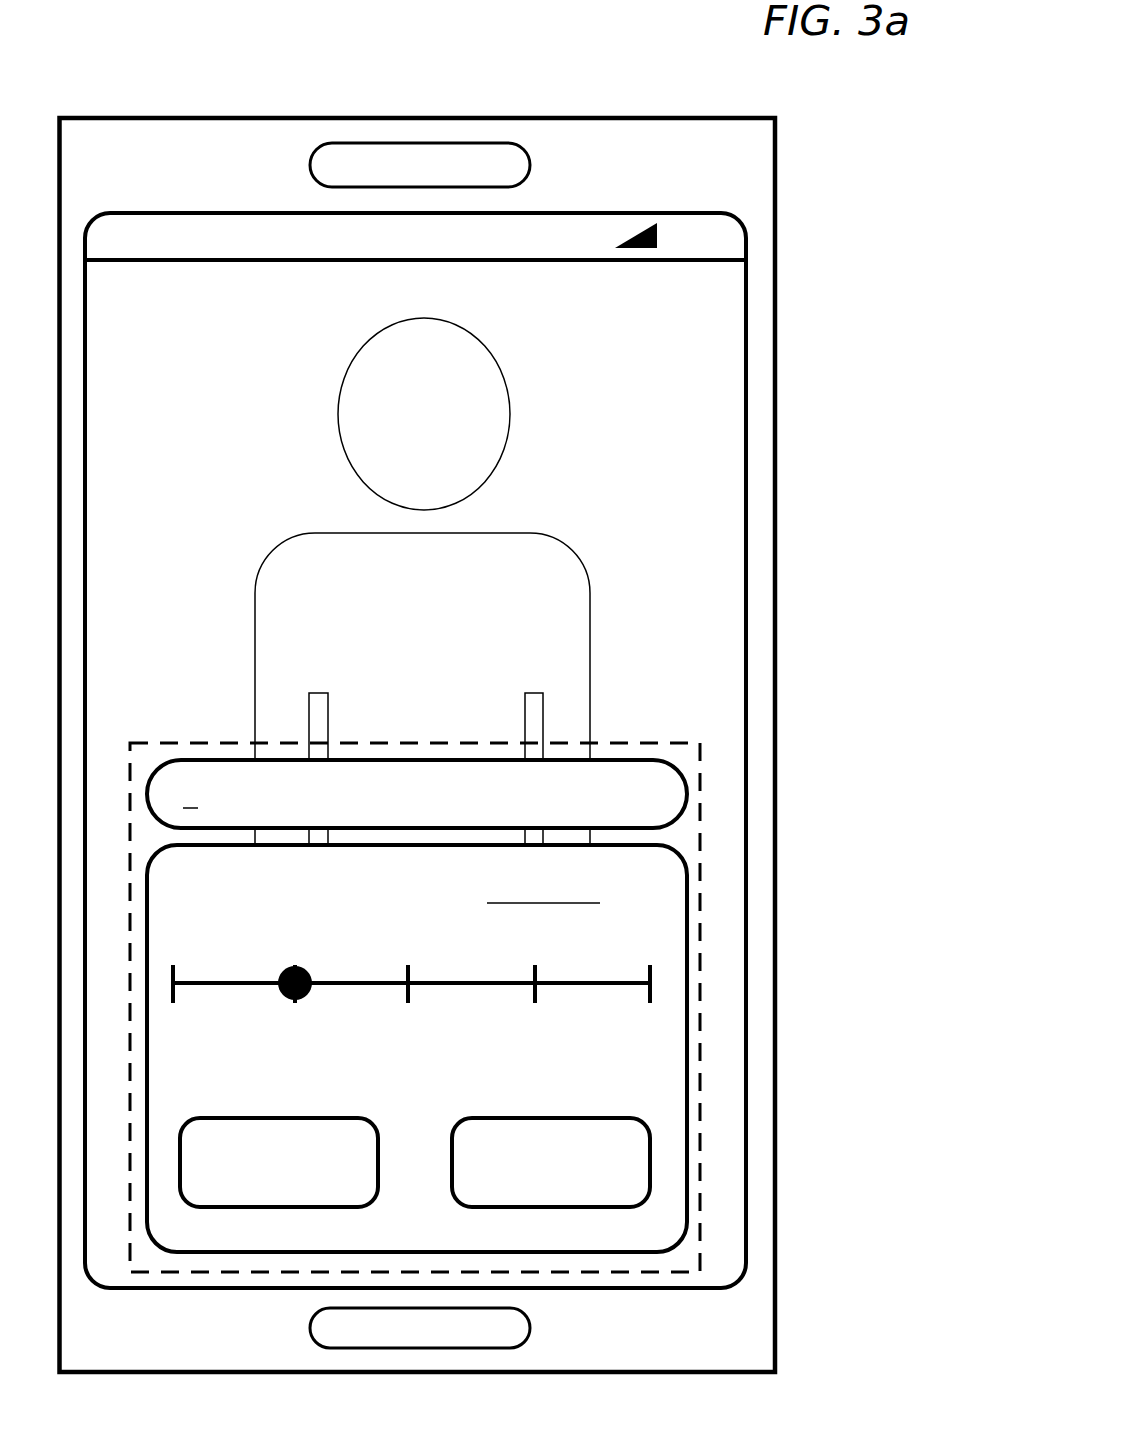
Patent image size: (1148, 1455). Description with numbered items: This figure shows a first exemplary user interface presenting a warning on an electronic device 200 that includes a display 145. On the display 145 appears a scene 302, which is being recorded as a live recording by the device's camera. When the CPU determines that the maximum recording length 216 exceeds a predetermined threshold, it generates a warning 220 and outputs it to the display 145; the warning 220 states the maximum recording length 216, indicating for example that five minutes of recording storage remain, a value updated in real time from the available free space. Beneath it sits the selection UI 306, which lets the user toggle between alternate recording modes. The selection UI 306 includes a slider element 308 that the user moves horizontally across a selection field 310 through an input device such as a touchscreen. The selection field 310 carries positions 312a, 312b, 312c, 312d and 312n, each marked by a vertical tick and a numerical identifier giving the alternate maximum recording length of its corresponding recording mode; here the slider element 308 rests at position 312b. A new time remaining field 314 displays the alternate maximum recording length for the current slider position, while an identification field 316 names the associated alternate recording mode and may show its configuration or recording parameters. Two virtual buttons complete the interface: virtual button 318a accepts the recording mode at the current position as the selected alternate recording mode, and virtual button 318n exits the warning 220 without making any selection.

The electronic device 200 is at (778, 165).
The display 145 is at (748, 342).
The scene 302 is at (573, 447).
The warning 220 is at (698, 743).
The maximum recording length 216 is at (687, 790).
The selection user interface 306 is at (683, 858).
The new time remaining field 314 is at (605, 882).
The slider element 308 is at (303, 964).
The selection field 310 is at (650, 978).
The position 312a is at (229, 1008).
The position 312b is at (352, 1008).
The position 312c is at (465, 1008).
The position 312d is at (592, 1008).
The position 312n is at (648, 995).
The identification field 316 is at (652, 1070).
The virtual button 318a is at (378, 1185).
The virtual button 318n is at (650, 1170).